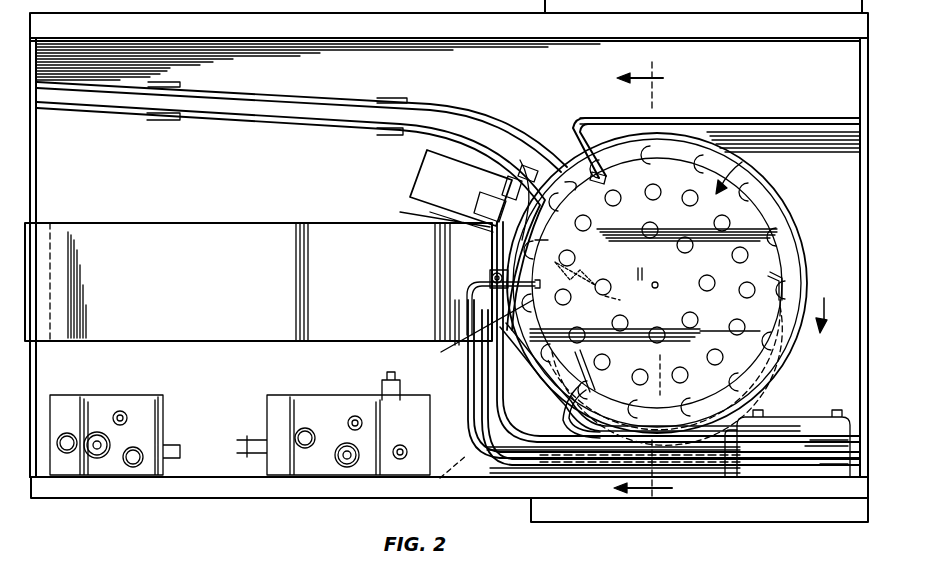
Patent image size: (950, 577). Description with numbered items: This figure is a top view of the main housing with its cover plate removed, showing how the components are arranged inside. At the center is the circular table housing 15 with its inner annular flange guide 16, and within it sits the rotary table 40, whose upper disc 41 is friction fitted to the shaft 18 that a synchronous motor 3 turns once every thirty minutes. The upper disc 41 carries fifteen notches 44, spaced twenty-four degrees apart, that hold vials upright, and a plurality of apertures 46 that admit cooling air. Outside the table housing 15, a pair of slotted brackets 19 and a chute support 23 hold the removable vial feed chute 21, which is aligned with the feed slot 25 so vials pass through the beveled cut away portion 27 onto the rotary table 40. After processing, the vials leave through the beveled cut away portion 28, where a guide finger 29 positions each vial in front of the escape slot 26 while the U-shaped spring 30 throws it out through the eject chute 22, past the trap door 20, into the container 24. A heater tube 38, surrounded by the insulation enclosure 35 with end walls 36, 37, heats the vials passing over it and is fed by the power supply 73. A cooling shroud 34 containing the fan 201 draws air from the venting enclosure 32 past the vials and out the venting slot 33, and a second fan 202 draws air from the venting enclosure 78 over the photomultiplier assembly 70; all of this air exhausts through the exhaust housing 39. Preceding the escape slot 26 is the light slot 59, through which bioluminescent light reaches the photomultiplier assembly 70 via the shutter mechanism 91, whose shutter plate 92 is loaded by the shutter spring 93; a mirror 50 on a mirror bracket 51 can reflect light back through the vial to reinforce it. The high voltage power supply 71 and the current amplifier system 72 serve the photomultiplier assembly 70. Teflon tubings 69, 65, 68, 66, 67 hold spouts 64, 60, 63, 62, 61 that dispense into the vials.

The motor 3 is at (653, 281).
The table housing 15 is at (802, 243).
The inner annular flange guide 16 is at (795, 275).
The shaft 18 is at (657, 285).
The slotted brackets 19 is at (556, 130).
The trap door 20 is at (482, 192).
The vial feed chute 21 is at (552, 138).
The eject chute 22 is at (500, 178).
The chute support 23 is at (183, 86).
The container 24 is at (418, 168).
The feed slot 25 is at (508, 112).
The escape slot 26 is at (414, 214).
The beveled cut away portion 27 is at (582, 196).
The beveled cut away portion 28 is at (497, 238).
The guide finger 29 is at (530, 172).
The U-shaped spring 30 is at (540, 240).
The venting enclosure 32 is at (785, 518).
The venting slot 33 is at (650, 377).
The cooling shroud 34 is at (467, 385).
The insulation enclosure 35 is at (698, 372).
The end wall 36 is at (765, 277).
The end wall 37 is at (578, 371).
The heater tube 38 is at (662, 372).
The exhaust housing 39 is at (705, 10).
The rotary table 40 is at (752, 168).
The upper disc 41 is at (628, 274).
The notches 44 is at (652, 118).
The apertures 46 is at (645, 240).
The mirror 50 is at (624, 299).
The mirror bracket 51 is at (578, 271).
The light slot 59 is at (466, 300).
The spout 60 is at (575, 395).
The spout 61 is at (566, 312).
The spout 62 is at (485, 395).
The spout 63 is at (473, 333).
The spout 64 is at (601, 176).
The Teflon tubing 65 is at (760, 412).
The Teflon tubing 66 is at (555, 455).
The Teflon tubing 67 is at (470, 458).
The Teflon tubing 68 is at (480, 446).
The Teflon tubing 69 is at (580, 118).
The photomultiplier assembly 70 is at (355, 222).
The high voltage power supply 71 is at (122, 395).
The current amplifier system 72 is at (290, 395).
The power supply 73 is at (800, 417).
The venting enclosure 78 is at (30, 236).
The shutter mechanism 91 is at (490, 278).
The shutter plate 92 is at (455, 318).
The shutter spring 93 is at (490, 270).
The fan 201 is at (440, 476).
The second fan 202 is at (45, 255).